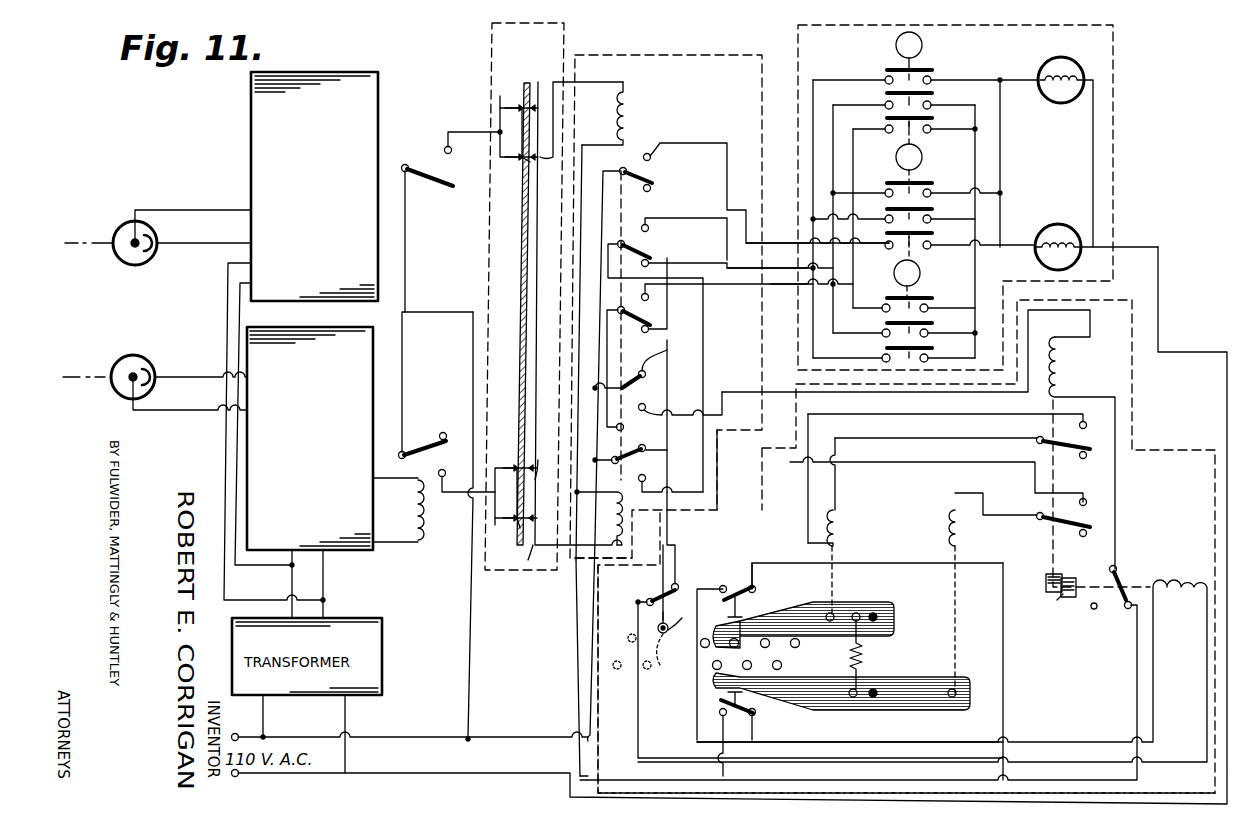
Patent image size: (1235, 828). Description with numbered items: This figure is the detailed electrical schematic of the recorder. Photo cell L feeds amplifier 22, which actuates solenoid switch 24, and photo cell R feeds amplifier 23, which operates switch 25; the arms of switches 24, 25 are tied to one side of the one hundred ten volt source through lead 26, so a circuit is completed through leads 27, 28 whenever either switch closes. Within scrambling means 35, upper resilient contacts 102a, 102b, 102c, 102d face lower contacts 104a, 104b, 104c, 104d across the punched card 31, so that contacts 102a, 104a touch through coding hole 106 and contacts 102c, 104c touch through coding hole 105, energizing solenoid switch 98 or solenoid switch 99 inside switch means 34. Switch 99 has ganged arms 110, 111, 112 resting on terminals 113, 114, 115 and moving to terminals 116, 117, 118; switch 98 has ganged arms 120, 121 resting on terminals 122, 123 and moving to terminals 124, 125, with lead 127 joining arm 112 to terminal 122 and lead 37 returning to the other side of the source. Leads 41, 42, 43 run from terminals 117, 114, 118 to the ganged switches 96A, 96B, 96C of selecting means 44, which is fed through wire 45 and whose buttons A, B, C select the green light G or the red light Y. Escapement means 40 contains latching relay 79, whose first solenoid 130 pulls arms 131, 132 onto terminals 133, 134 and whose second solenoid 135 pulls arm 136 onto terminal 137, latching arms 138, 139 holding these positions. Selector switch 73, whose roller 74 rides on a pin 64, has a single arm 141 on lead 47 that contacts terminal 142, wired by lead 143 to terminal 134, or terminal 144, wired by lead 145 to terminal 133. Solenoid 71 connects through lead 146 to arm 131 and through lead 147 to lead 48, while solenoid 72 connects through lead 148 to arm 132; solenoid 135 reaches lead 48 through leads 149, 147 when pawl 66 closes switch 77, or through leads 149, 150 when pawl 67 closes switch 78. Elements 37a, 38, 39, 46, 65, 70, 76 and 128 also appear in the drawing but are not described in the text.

The electrical amplifier 22 is at (360, 545).
The electrical amplifier 23 is at (252, 112).
The solenoid switch 24 is at (422, 442).
The solenoid switch 25 is at (432, 188).
The lead 26 is at (468, 630).
The lead 27 is at (456, 508).
The lead 28 is at (460, 130).
The card 31 is at (521, 282).
The electrical switch means 34 is at (666, 306).
The scrambling means 35 is at (492, 45).
The lead 37 is at (598, 716).
The conductor 37a is at (577, 686).
The lower pickup 38 is at (565, 558).
The conductor 39 is at (567, 82).
The escapement means 40 is at (906, 546).
The lead 41 is at (786, 240).
The lead 42 is at (790, 262).
The lead 43 is at (790, 295).
The selecting means 44 is at (955, 197).
The wire 45 is at (1135, 244).
The conductor 46 is at (790, 390).
The lead 47 is at (680, 500).
The lead 48 is at (604, 770).
The pin 64 is at (800, 644).
The holes 65 is at (782, 665).
The pawl 66 is at (840, 604).
The pawl 67 is at (834, 710).
The spring 70 is at (864, 648).
The solenoid 71 is at (840, 533).
The solenoid 72 is at (946, 533).
The selector switch 73 is at (652, 614).
The roller 74 is at (680, 623).
The pivot 76 is at (656, 630).
The switch 77 is at (736, 584).
The switch 78 is at (748, 710).
The latching relay 79 is at (1066, 606).
The ganged switch 96A is at (935, 134).
The ganged switch 96B is at (958, 180).
The ganged switch 96C is at (950, 290).
The solenoid switch 98 is at (622, 506).
The solenoid switch 99 is at (642, 142).
The resilient electrical contact 102a is at (510, 520).
The resilient electrical contact 102b is at (506, 466).
The resilient electrical contact 102c is at (506, 160).
The resilient electrical contact 102d is at (508, 105).
The resilient electrical contact 104a is at (535, 545).
The resilient electrical contact 104b is at (540, 470).
The resilient electrical contact 104c is at (546, 157).
The resilient electrical contact 104d is at (540, 82).
The coding hole 105 is at (526, 166).
The coding hole 106 is at (520, 530).
The switch arm 110 is at (654, 178).
The switch arm 111 is at (654, 252).
The switch arm 112 is at (654, 319).
The terminal 113 is at (651, 189).
The terminal 114 is at (654, 264).
The terminal 115 is at (649, 330).
The terminal 116 is at (651, 157).
The terminal 117 is at (649, 228).
The terminal 118 is at (649, 297).
The switch arm 120 is at (648, 452).
The switch arm 121 is at (622, 386).
The terminal 122 is at (636, 447).
The terminal 123 is at (650, 365).
The terminal 124 is at (640, 480).
The terminal 125 is at (655, 407).
The lead 127 is at (631, 427).
The conductor 128 is at (667, 360).
The first solenoid 130 is at (1062, 372).
The switch arm 131 is at (1100, 442).
The switch arm 132 is at (1100, 522).
The terminal 133 is at (1098, 412).
The terminal 134 is at (1098, 488).
The second solenoid 135 is at (1188, 563).
The switch arm 136 is at (1118, 608).
The terminal 137 is at (1128, 612).
The latching arm 138 is at (1046, 580).
The latching arm 139 is at (1063, 592).
The switch arm 141 is at (646, 600).
The terminal 142 is at (662, 582).
The lead 143 is at (926, 461).
The terminal 144 is at (740, 585).
The lead 145 is at (932, 416).
The lead 146 is at (986, 438).
The lead 147 is at (1003, 674).
The lead 148 is at (1012, 494).
The lead 149 is at (1070, 728).
The lead 150 is at (730, 750).
The photo cell R is at (148, 262).
The photo cell L is at (152, 360).
The green light G is at (1065, 152).
The red light Y is at (1058, 236).
The button A is at (909, 51).
The button B is at (909, 150).
The button C is at (907, 265).